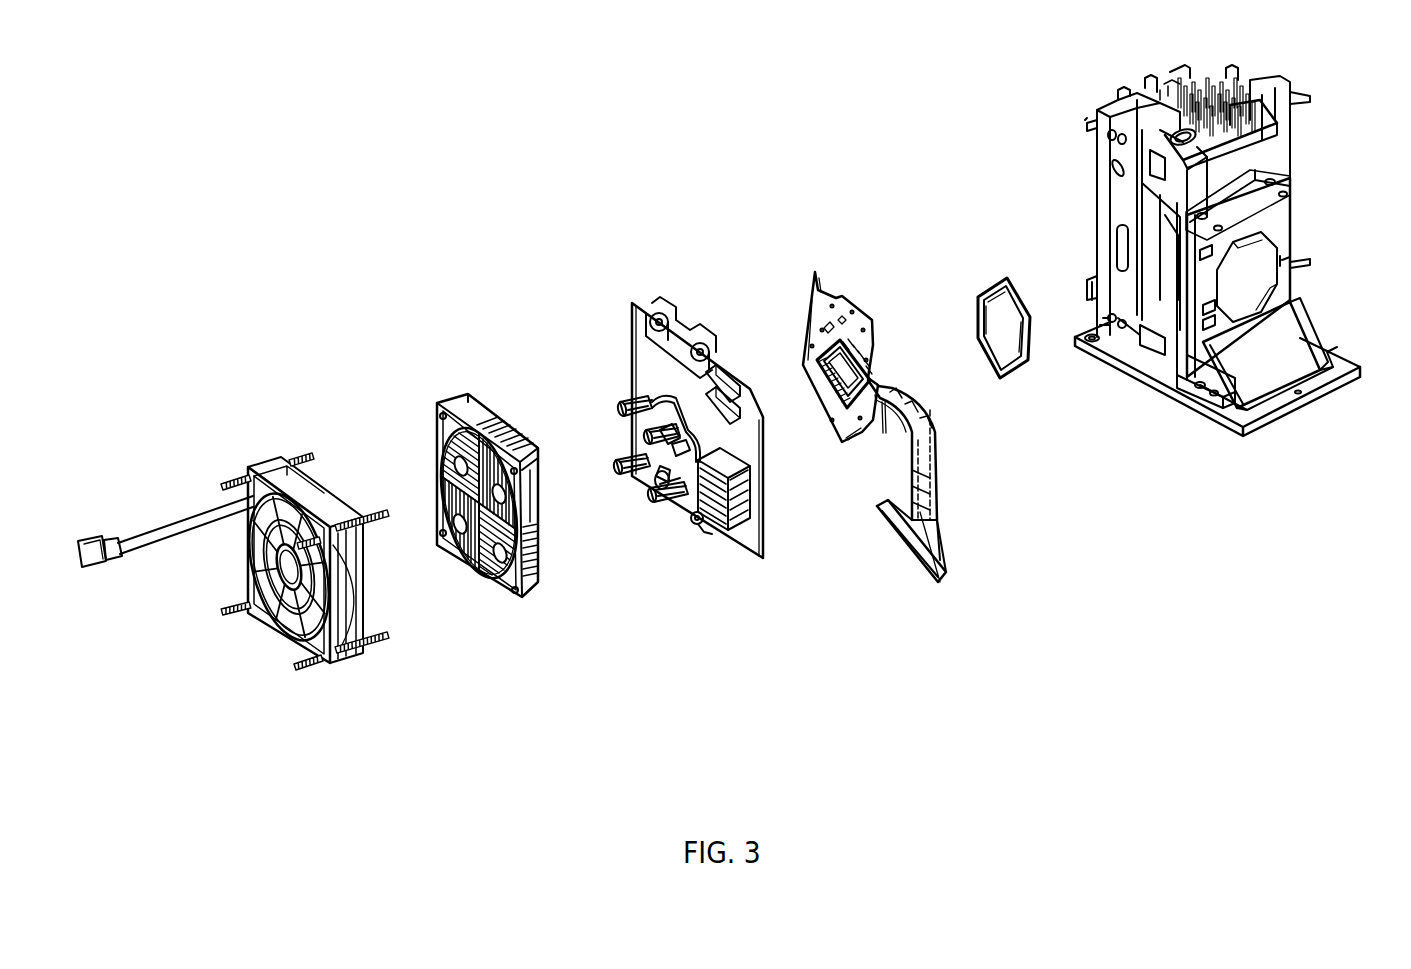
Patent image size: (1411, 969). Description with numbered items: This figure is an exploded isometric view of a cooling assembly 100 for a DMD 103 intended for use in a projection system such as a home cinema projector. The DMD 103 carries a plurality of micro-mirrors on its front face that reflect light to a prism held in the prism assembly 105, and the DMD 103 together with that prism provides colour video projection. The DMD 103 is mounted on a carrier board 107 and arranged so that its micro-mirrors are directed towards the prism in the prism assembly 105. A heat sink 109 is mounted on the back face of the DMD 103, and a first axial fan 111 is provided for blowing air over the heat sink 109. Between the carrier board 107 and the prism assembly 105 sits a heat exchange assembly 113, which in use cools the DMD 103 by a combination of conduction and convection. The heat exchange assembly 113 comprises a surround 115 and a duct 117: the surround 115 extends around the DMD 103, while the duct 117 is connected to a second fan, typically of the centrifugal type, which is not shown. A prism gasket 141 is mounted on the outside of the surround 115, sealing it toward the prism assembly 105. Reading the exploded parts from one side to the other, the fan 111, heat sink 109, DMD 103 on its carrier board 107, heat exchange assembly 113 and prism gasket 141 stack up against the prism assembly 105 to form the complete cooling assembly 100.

The cooling assembly 100 is at (276, 209).
The prism assembly 105 is at (1324, 160).
The heat sink 109 is at (398, 404).
The first axial fan 111 is at (205, 445).
The DMD 103 is at (648, 452).
The carrier board 107 is at (768, 556).
The surround 115 is at (872, 323).
The duct 117 is at (913, 483).
The heat exchange assembly 113 is at (966, 547).
The prism gasket 141 is at (1017, 376).